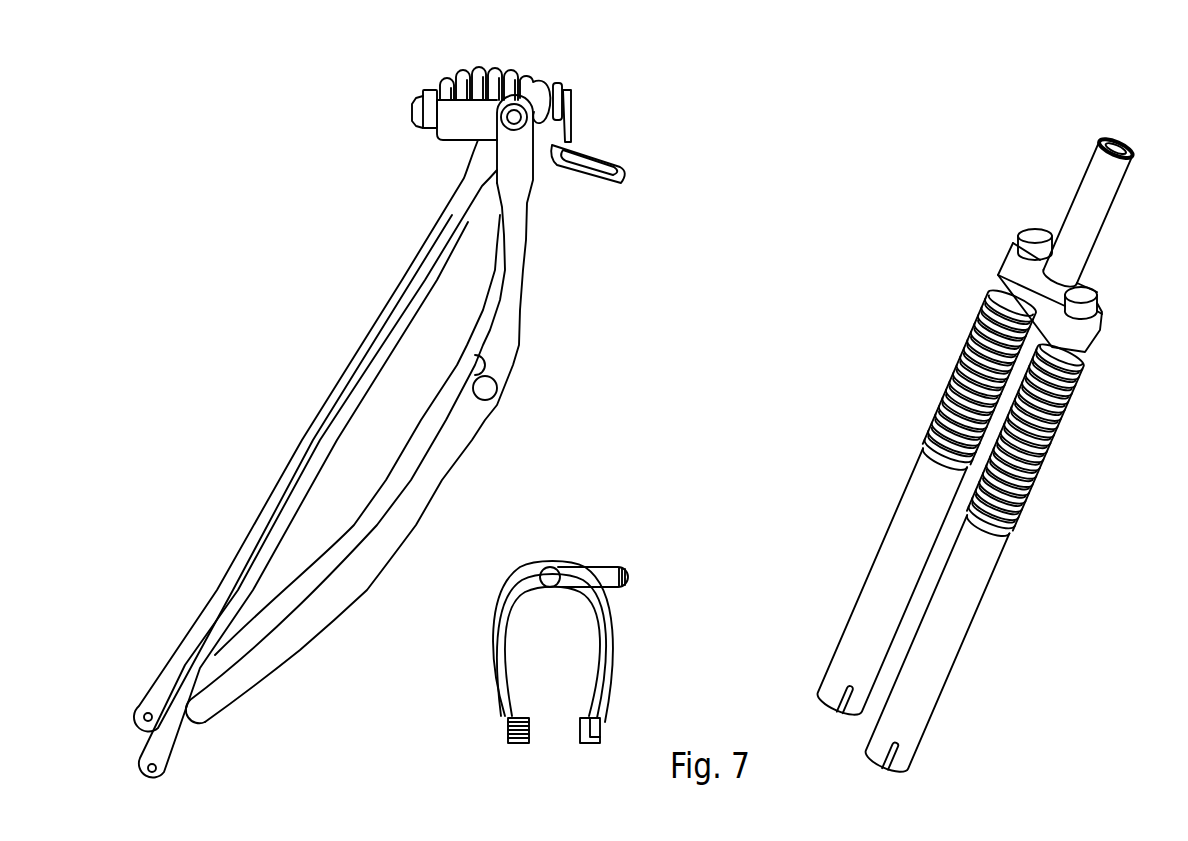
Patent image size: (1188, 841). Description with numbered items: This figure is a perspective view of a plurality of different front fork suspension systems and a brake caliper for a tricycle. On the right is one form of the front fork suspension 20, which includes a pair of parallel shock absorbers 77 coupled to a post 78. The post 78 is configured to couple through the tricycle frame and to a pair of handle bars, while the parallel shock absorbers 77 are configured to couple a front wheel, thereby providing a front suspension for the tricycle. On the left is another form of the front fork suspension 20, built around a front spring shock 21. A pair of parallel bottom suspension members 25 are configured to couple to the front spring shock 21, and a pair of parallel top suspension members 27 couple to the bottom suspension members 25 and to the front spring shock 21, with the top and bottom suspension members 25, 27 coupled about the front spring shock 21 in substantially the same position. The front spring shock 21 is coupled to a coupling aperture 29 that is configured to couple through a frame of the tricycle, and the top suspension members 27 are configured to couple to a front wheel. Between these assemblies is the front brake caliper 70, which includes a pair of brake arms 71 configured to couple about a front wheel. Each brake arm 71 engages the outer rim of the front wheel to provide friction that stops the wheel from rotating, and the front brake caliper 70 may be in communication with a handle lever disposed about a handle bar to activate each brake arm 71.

The front fork suspension 20 is at (367, 221).
The front spring shock 21 is at (507, 72).
The bottom suspension members 25 is at (436, 483).
The top suspension members 27 is at (320, 436).
The coupling aperture 29 is at (605, 152).
The front brake caliper 70 is at (633, 557).
The brake arms 71 is at (503, 657).
The parallel shock absorbers 77 is at (900, 543).
The post 78 is at (1090, 218).